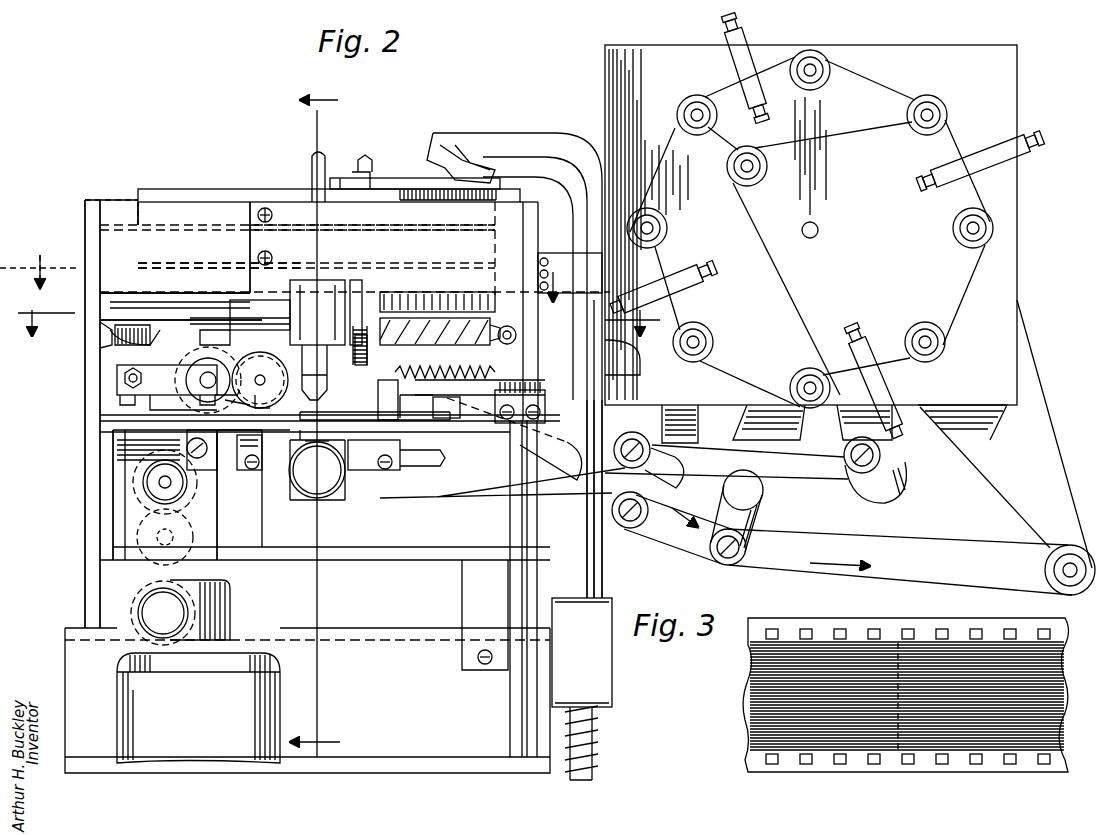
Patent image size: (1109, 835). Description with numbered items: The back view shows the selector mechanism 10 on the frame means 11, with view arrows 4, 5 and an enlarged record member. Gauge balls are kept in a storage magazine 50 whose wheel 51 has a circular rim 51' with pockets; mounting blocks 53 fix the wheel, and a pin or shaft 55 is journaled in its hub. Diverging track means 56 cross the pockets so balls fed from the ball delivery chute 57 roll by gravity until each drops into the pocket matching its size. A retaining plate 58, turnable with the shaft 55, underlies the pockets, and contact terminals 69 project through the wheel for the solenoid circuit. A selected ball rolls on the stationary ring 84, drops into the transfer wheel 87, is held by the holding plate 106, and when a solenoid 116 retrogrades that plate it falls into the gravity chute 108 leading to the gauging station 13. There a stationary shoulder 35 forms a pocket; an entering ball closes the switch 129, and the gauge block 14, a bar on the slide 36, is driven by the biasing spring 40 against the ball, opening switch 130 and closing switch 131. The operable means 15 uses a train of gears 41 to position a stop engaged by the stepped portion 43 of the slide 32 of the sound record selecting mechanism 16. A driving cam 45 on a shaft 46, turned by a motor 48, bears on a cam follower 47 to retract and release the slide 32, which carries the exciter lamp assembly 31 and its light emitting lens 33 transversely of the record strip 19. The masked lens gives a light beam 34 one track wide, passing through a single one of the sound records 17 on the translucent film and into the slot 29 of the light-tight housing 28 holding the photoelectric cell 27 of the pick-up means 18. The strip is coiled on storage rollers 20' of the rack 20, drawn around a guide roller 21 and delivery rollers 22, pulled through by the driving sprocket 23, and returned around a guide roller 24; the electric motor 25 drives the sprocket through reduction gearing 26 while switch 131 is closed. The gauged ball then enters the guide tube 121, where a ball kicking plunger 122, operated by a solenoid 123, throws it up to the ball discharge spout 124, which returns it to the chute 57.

In FIG. 2, the selector mechanism 10 is at (138, 192).
In FIG. 2, the mounting blocks 53 is at (105, 212).
In FIG. 2, the track means 56 is at (212, 189).
In FIG. 2, the circular rim 51' is at (153, 187).
In FIG. 2, the storage magazine 50 is at (250, 188).
In FIG. 2, the pin or shaft 55 is at (313, 175).
In FIG. 2, the contact terminal 69 is at (360, 178).
In FIG. 2, the ball delivery chute 57 is at (372, 142).
In FIG. 2, the ball discharge spout 124 is at (535, 137).
In FIG. 2, the wheel 51 is at (128, 228).
In FIG. 2, the ring 84 is at (165, 262).
In FIG. 2, the transfer wheel 87 is at (148, 284).
In FIG. 2, the holding plate 106 is at (148, 300).
In FIG. 2, the stepped portion 43 is at (240, 322).
In FIG. 2, the sound record selecting mechanism 16 is at (270, 311).
In FIG. 2, the exciter lamp assembly 31 is at (317, 312).
In FIG. 2, the light emitting lens 33 is at (316, 372).
In FIG. 2, the carrying frame 32 is at (345, 350).
In FIG. 2, the driving cam 45 is at (368, 357).
In FIG. 2, the cam follower 47 is at (368, 333).
In FIG. 2, the shaft 46 is at (427, 333).
In FIG. 2, the retaining plate 58 is at (458, 232).
In FIG. 2, the frame means 11 is at (85, 295).
In FIG. 2, the section line 5 is at (42, 323).
In FIG. 2, the gravity trough or chute 108 is at (100, 335).
In FIG. 2, the operable means 15 is at (168, 357).
In FIG. 2, the train of gears 41 is at (183, 402).
In FIG. 2, the normally open switch 130 is at (160, 410).
In FIG. 2, the normally open switch 131 is at (165, 415).
In FIG. 2, the driving sprocket 23 is at (150, 485).
In FIG. 2, the slide 36 is at (258, 430).
In FIG. 2, the elongated lateral slot 29 is at (317, 469).
In FIG. 2, the photoelectric cell 27 is at (336, 482).
In FIG. 2, the pick-up means 18 is at (288, 484).
In FIG. 2, the housing 28 is at (333, 490).
In FIG. 2, the translucent film 19 is at (362, 500).
In FIG. 2, the stationary shoulder 35 is at (420, 452).
In FIG. 2, the solenoid 116 is at (416, 410).
In FIG. 2, the switch 129 is at (487, 388).
In FIG. 2, the gauging station 13 is at (404, 408).
In FIG. 2, the gauge block 14 is at (383, 410).
In FIG. 2, the biasing spring 40 is at (478, 372).
In FIG. 2, the reduction gearing 26 is at (198, 562).
In FIG. 2, the electric motor 25 is at (198, 708).
In FIG. 2, the section line 4 is at (315, 412).
In FIG. 2, the guide tube 121 is at (602, 562).
In FIG. 2, the solenoid 123 is at (612, 693).
In FIG. 2, the ball kicking plunger 122 is at (600, 725).
In FIG. 2, the rack 20 is at (827, 225).
In FIG. 2, the storage rollers 20' is at (810, 229).
In FIG. 2, the guide roller 21 is at (762, 172).
In FIG. 2, the motor 48 is at (622, 362).
In FIG. 2, the delivery rollers 22 is at (842, 456).
In FIG. 2, the guide roller 24 is at (1058, 548).
In FIG. 3, the sound records 17 is at (765, 728).
In FIG. 3, the light beam 34 is at (900, 708).